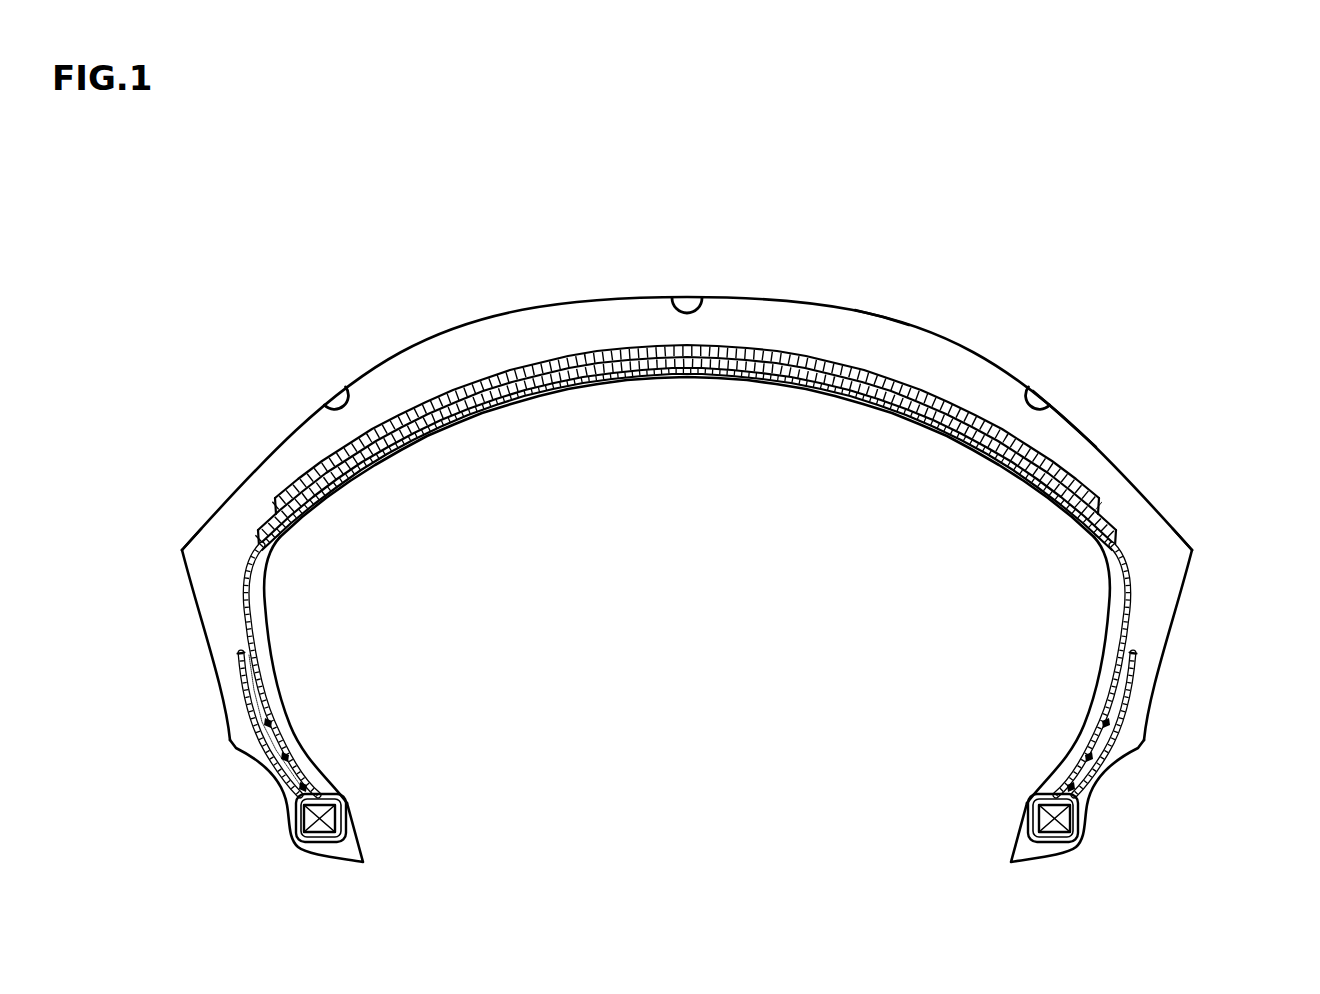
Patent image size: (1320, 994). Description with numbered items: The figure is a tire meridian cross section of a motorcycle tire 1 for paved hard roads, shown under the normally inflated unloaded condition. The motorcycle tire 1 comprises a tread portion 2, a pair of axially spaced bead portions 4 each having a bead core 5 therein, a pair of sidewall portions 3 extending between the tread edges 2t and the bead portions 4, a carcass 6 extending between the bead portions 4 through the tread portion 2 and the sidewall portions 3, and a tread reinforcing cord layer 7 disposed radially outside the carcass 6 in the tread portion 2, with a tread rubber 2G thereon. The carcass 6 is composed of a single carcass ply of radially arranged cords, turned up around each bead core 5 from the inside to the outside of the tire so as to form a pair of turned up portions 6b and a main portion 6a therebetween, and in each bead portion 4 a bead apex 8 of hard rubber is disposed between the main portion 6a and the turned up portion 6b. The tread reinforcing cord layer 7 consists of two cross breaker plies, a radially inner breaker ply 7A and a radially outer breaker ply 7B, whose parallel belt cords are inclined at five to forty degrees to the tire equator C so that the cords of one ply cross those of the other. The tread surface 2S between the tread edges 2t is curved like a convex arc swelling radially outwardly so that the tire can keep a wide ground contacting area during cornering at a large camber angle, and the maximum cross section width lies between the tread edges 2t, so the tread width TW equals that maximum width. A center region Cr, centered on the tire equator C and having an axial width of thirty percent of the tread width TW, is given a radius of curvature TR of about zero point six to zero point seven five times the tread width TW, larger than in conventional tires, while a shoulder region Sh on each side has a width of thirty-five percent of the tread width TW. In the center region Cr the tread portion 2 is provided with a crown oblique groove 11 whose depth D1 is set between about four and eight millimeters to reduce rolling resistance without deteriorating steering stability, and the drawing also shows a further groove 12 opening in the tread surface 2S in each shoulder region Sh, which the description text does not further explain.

The motorcycle tire 1 is at (687, 532).
The tread portion 2 is at (688, 372).
The tread rubber 2G is at (888, 352).
The tread surface 2S is at (1083, 432).
The tread edge 2t is at (182, 548).
The sidewall portion 3 is at (195, 665).
The bead portion 4 is at (686, 762).
The bead core 5 is at (333, 818).
The carcass 6 is at (687, 605).
The main portion 6a is at (1128, 606).
The turned up portion 6b is at (1118, 673).
The tread reinforcing cord layer 7 is at (687, 451).
The inner breaker ply 7A is at (866, 378).
The outer breaker ply 7B is at (797, 372).
The bead apex 8 is at (298, 777).
The crown oblique groove 11 is at (697, 296).
The shoulder main groove 12 is at (336, 400).
The tread width TW is at (1192, 550).
The shoulder region Sh is at (1192, 178).
The center region Cr is at (537, 178).
The tire equator C is at (687, 780).
The groove depth D1 is at (687, 313).
The radius of curvature TR is at (583, 303).